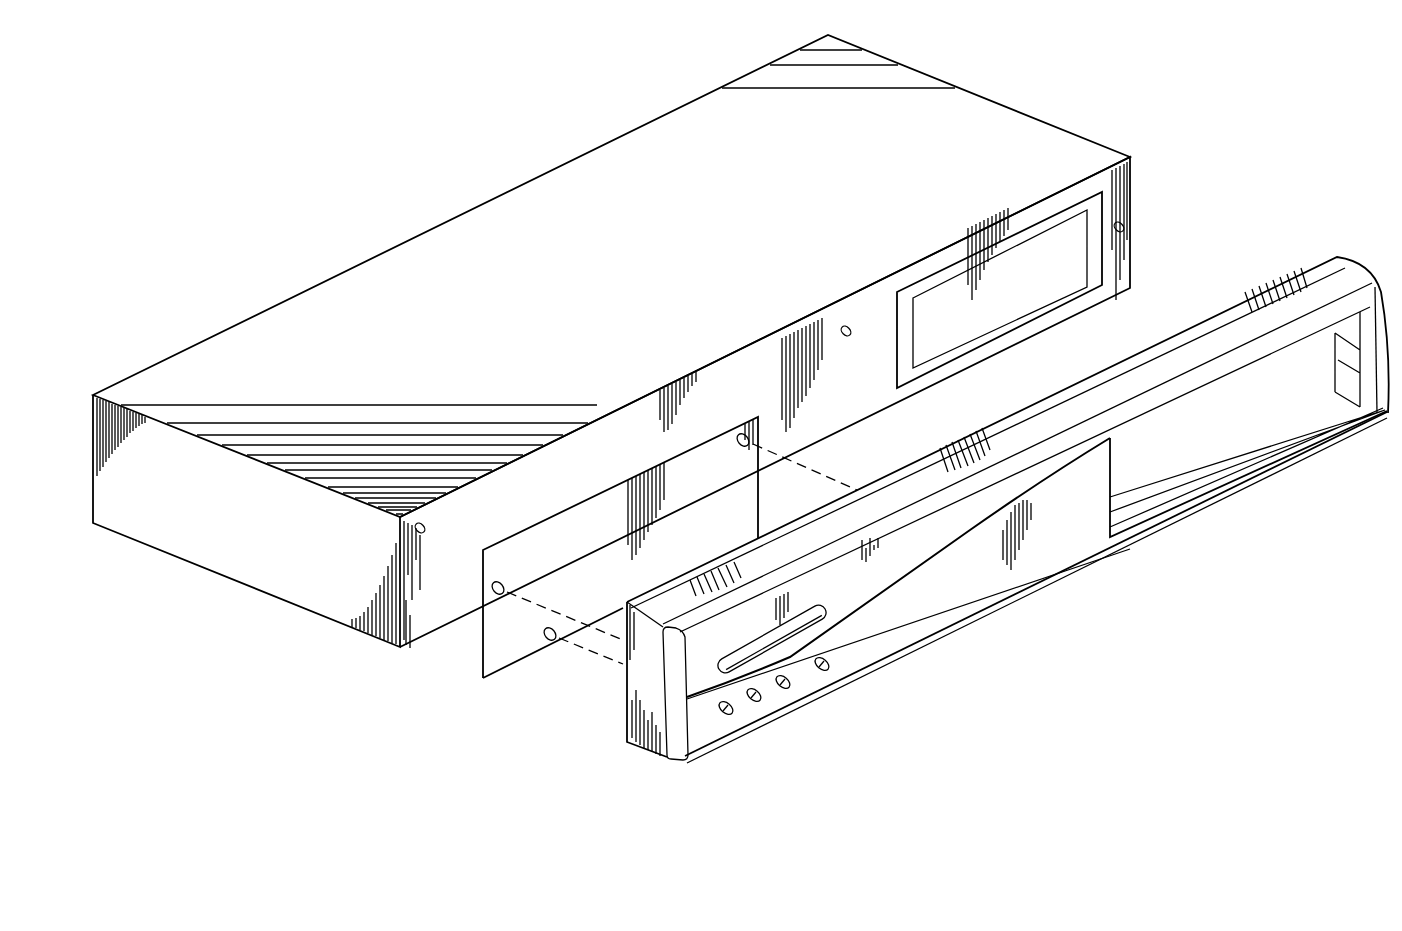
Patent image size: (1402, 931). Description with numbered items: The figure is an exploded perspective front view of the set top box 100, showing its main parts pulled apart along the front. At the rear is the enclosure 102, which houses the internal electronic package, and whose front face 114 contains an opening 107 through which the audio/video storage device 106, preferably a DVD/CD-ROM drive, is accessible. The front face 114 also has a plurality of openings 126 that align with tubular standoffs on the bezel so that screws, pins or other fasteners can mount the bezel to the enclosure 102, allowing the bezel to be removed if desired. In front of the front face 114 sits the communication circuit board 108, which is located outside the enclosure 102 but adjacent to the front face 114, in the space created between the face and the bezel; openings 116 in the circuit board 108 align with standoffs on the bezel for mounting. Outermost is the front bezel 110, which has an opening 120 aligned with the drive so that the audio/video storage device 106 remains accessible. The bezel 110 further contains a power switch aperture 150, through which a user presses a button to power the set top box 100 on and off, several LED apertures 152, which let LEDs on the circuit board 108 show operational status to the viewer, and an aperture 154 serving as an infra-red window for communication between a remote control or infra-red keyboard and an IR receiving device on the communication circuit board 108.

The set top box 100 is at (364, 185).
The enclosure 102 is at (557, 180).
The audio/video storage device 106 is at (1041, 296).
The opening 107 is at (997, 336).
The communication circuit board 108 is at (496, 665).
The front bezel 110 is at (952, 612).
The front face 114 is at (410, 630).
The openings 116 is at (739, 450).
The opening 120 is at (1195, 447).
The openings 126 is at (1123, 231).
The power switch aperture 150 is at (826, 669).
The LED apertures 152 is at (788, 690).
The aperture 154 is at (838, 620).